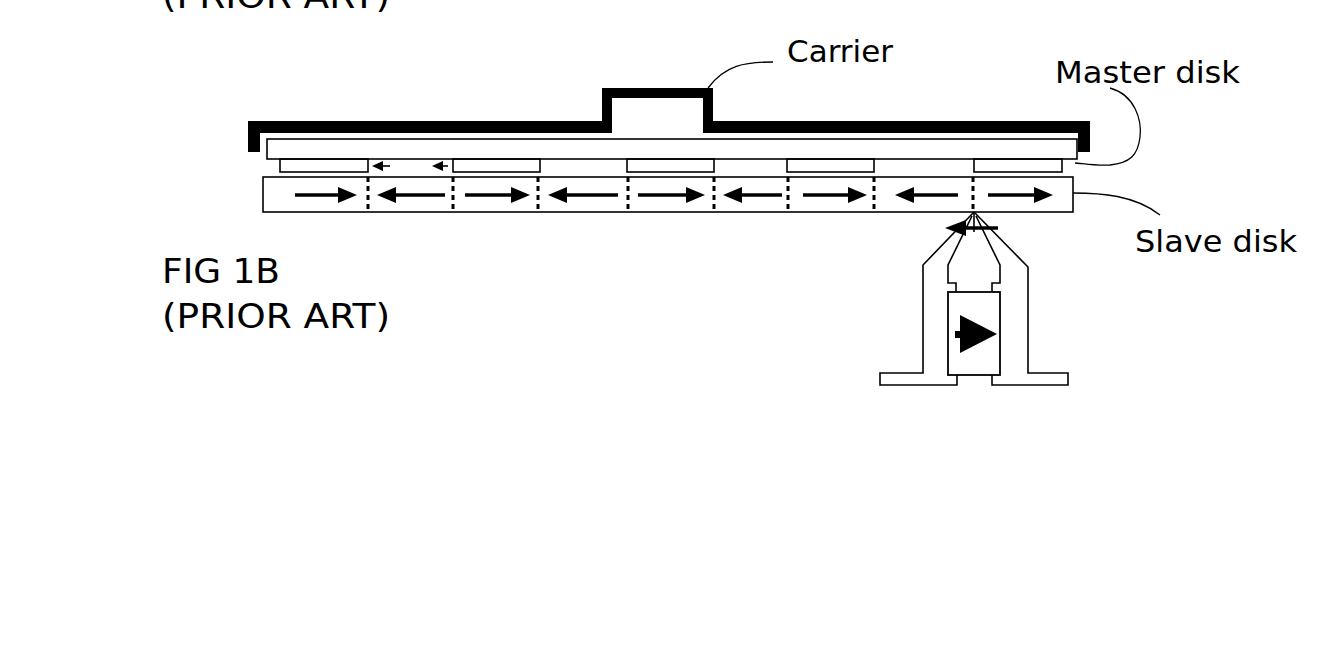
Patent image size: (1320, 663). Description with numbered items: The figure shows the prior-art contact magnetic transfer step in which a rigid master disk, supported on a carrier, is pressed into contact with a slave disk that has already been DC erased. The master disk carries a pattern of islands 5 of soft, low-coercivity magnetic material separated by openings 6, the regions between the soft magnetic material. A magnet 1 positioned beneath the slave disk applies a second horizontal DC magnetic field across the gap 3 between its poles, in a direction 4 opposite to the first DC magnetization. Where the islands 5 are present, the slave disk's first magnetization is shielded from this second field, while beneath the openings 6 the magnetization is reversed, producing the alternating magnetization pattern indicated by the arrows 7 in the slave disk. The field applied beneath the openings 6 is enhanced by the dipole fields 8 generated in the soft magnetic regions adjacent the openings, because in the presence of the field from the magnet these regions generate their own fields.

The magnet 1 is at (1017, 331).
The gap 3 is at (972, 235).
The direction 4 is at (998, 229).
The islands 5 is at (277, 167).
The openings 6 is at (410, 167).
The arrows 7 is at (408, 200).
The dipole fields 8 is at (388, 165).